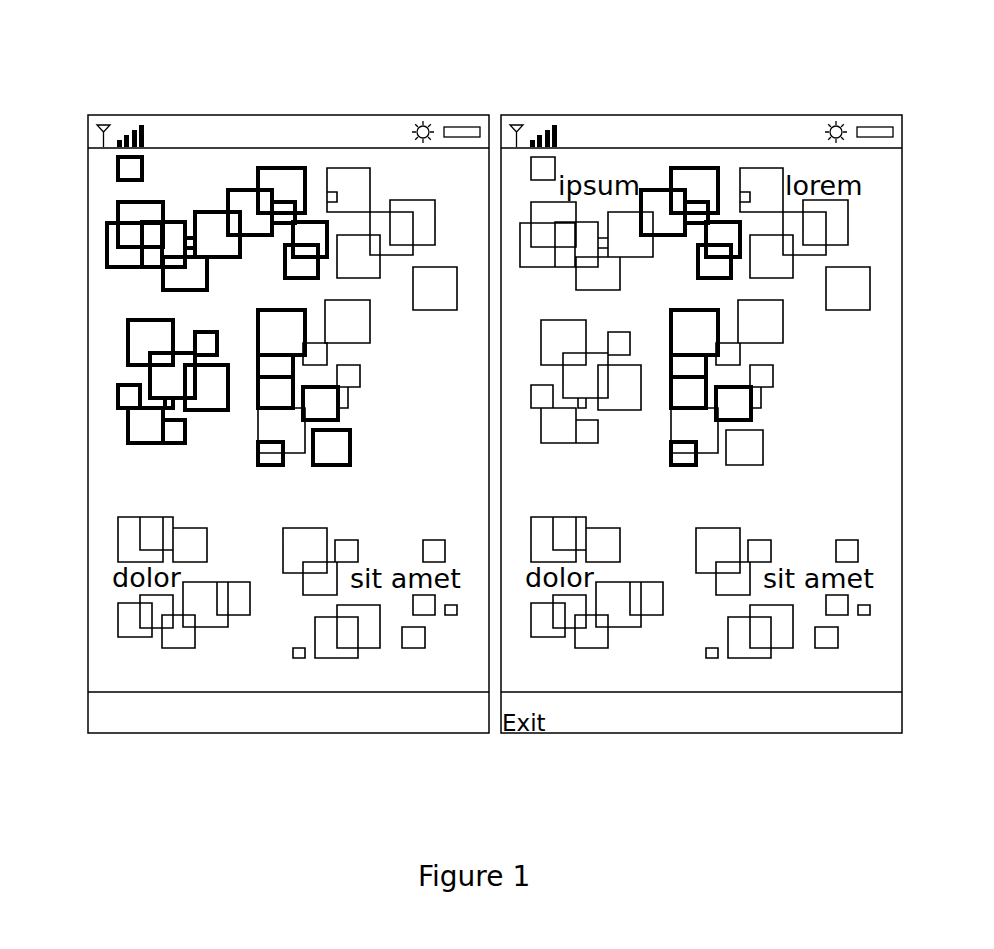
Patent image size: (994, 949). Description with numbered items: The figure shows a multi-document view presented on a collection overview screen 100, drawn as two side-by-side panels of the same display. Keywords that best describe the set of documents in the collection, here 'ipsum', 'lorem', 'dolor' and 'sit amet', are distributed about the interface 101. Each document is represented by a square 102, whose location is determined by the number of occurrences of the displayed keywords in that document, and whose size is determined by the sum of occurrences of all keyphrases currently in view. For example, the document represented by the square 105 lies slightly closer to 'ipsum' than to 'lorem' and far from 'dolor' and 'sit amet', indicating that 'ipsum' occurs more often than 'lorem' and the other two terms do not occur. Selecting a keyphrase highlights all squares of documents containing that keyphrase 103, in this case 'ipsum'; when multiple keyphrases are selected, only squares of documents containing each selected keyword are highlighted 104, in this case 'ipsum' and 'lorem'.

The collection overview screen 100 is at (251, 657).
The interface 101 is at (172, 172).
The square 102 is at (284, 205).
The highlighted squares of documents containing a selected keyphrase 103 is at (128, 345).
The highlighted squares of documents containing all selected keyphrases 104 is at (696, 178).
The square representing a document 105 is at (357, 182).